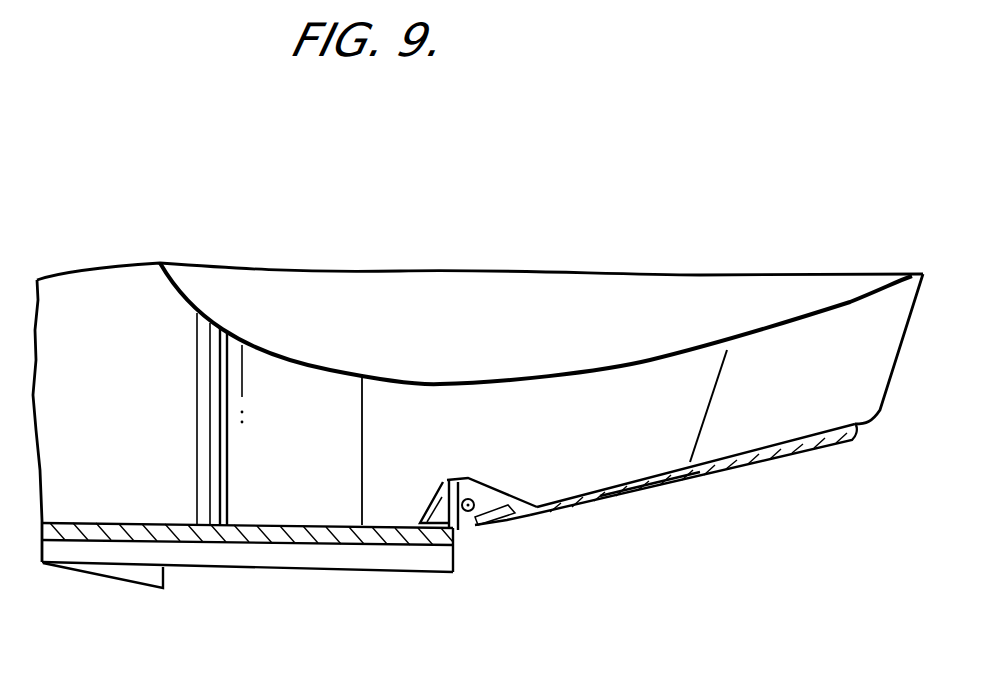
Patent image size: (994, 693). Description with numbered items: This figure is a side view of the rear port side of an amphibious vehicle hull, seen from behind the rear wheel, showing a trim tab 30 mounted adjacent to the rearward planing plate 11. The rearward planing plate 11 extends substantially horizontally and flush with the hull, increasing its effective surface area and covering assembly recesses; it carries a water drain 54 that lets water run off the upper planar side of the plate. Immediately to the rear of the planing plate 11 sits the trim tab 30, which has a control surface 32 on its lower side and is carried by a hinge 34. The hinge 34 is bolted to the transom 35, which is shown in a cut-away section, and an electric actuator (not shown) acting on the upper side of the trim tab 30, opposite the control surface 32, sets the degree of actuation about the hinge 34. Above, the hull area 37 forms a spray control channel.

The rearward planing plate 11 is at (262, 568).
The trim tab 30 is at (643, 486).
The control surface 32 is at (800, 455).
The hinge 34 is at (470, 512).
The transom 35 is at (445, 490).
The spray control channel 37 is at (540, 410).
The water drain 54 is at (128, 573).